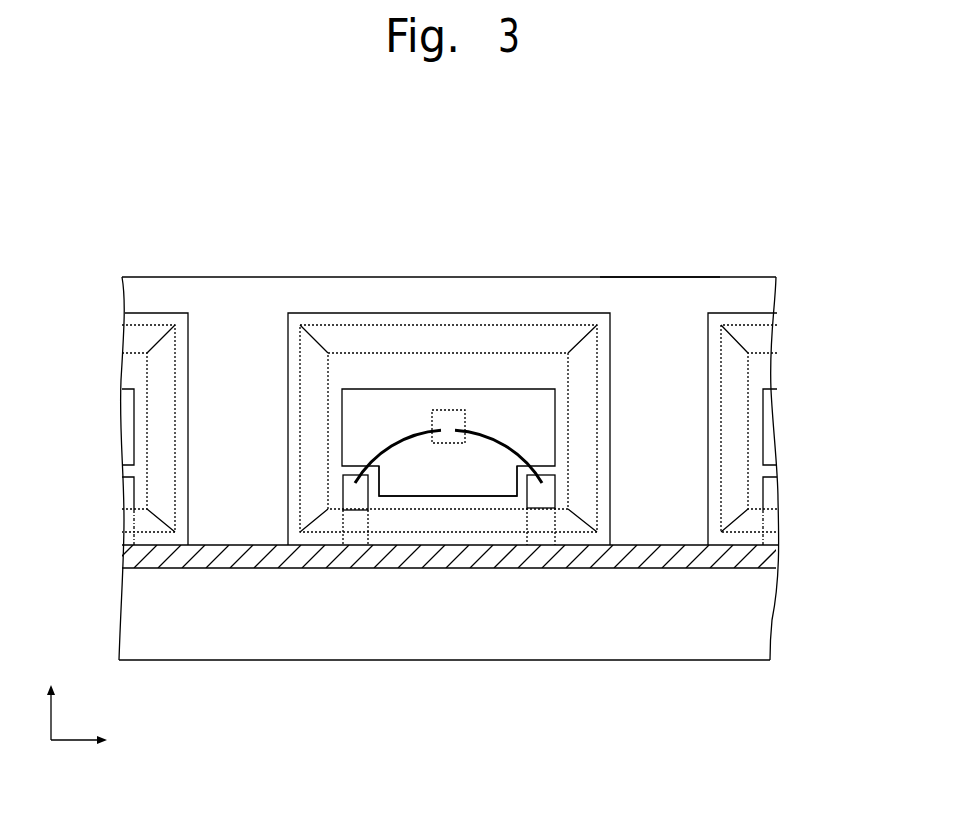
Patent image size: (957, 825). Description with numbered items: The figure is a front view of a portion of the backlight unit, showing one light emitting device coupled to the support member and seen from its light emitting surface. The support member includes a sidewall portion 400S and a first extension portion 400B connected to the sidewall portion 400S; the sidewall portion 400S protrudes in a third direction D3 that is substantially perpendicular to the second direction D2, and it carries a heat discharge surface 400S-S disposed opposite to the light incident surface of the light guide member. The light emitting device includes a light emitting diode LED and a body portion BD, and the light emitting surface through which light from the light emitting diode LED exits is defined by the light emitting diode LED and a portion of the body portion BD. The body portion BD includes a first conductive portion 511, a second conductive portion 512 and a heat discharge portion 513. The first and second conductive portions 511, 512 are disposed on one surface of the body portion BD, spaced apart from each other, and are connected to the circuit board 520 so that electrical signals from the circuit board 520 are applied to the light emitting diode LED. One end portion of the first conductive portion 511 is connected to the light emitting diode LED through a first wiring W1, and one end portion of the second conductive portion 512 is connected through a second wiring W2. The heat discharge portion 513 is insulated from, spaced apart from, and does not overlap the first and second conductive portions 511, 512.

The sidewall portion 400S is at (242, 277).
The heat discharge surface 400S-S is at (655, 292).
The light emitting diode LED is at (447, 410).
The body portion BD is at (587, 445).
The first wiring W1 is at (398, 453).
The second wiring W2 is at (498, 453).
The first conductive portion 511 is at (355, 500).
The second conductive portion 512 is at (542, 500).
The heat discharge portion 513 is at (445, 487).
The circuit board 520 is at (758, 556).
The first extension portion 400B is at (757, 615).
The third direction D3 is at (50, 698).
The second direction D2 is at (93, 742).